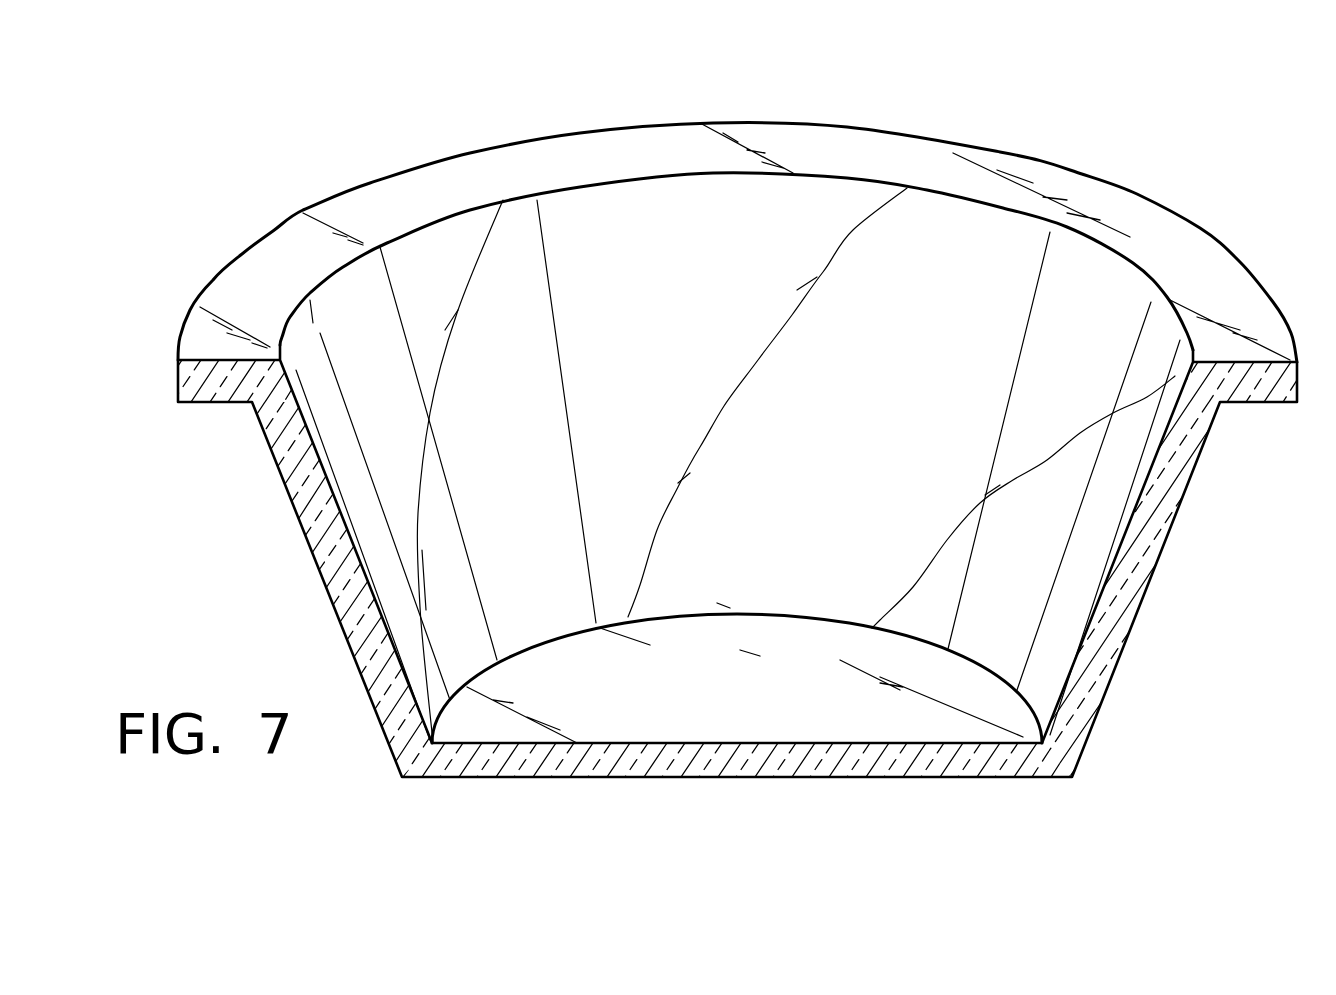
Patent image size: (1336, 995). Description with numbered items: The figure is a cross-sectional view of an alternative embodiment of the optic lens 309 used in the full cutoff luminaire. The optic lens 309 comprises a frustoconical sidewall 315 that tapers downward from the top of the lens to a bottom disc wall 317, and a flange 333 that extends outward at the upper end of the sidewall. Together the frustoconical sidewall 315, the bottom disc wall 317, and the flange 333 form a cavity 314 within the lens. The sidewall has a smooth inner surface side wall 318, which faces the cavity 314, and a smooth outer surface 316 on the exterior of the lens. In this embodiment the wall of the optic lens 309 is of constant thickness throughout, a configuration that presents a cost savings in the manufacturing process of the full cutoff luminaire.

The optic lens 309 is at (1227, 153).
The cavity 314 is at (927, 190).
The smooth inner surface side wall 318 is at (620, 222).
The flange 333 is at (178, 378).
The frustoconical sidewall 315 is at (342, 580).
The smooth outer surface 316 is at (1173, 532).
The bottom disc wall 317 is at (900, 783).